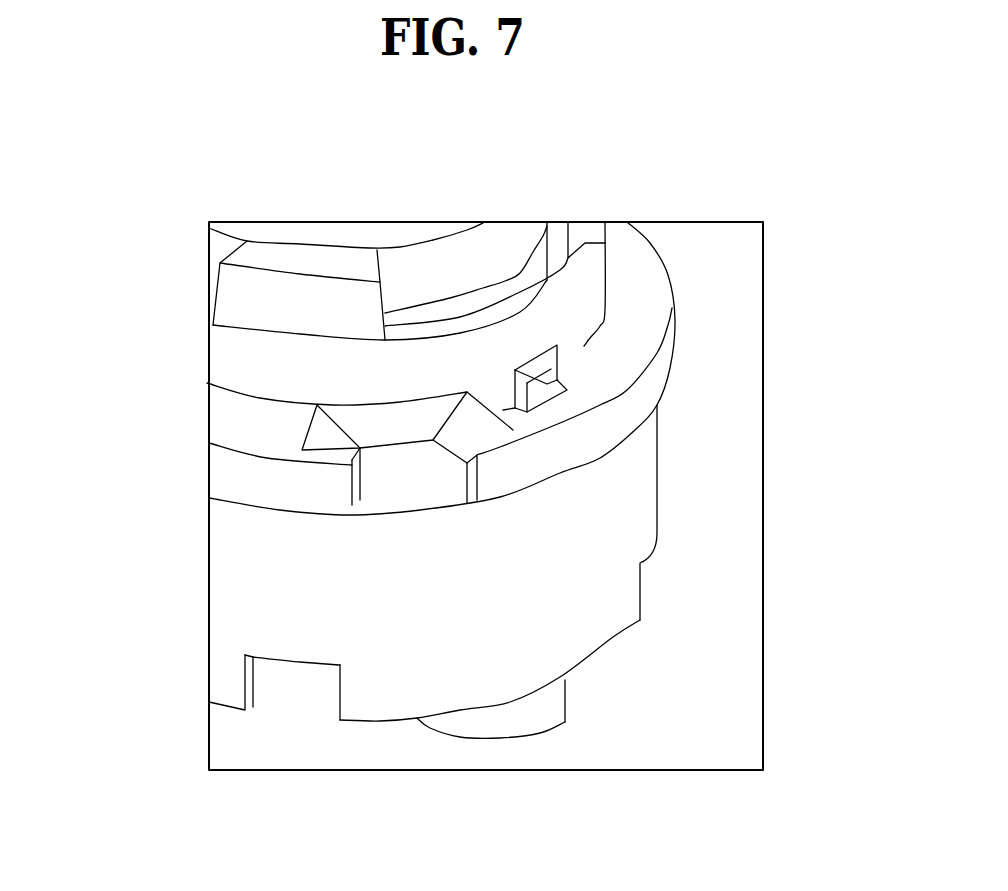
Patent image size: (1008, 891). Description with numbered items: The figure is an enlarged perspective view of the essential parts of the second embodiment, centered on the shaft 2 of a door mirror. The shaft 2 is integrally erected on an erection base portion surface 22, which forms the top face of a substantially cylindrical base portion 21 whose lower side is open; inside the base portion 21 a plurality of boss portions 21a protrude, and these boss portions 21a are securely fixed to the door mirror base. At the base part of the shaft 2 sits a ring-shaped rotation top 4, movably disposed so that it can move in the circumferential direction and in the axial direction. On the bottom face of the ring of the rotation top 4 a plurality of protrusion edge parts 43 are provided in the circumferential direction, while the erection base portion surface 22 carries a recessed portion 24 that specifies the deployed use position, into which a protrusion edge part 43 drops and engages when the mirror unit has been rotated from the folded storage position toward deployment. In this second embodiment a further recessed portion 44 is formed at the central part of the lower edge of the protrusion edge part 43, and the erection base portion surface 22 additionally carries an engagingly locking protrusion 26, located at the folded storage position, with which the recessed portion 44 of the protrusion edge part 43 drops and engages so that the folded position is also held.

The shaft 2 is at (678, 466).
The base portion 21 is at (632, 503).
The boss portion 21a is at (555, 723).
The erection base portion surface 22 is at (243, 430).
The recessed portion 24 is at (401, 466).
The engagingly locking protrusion 26 is at (540, 384).
The rotation top 4 is at (587, 288).
The protrusion edge part 43 is at (584, 348).
The recessed portion 44 is at (547, 363).